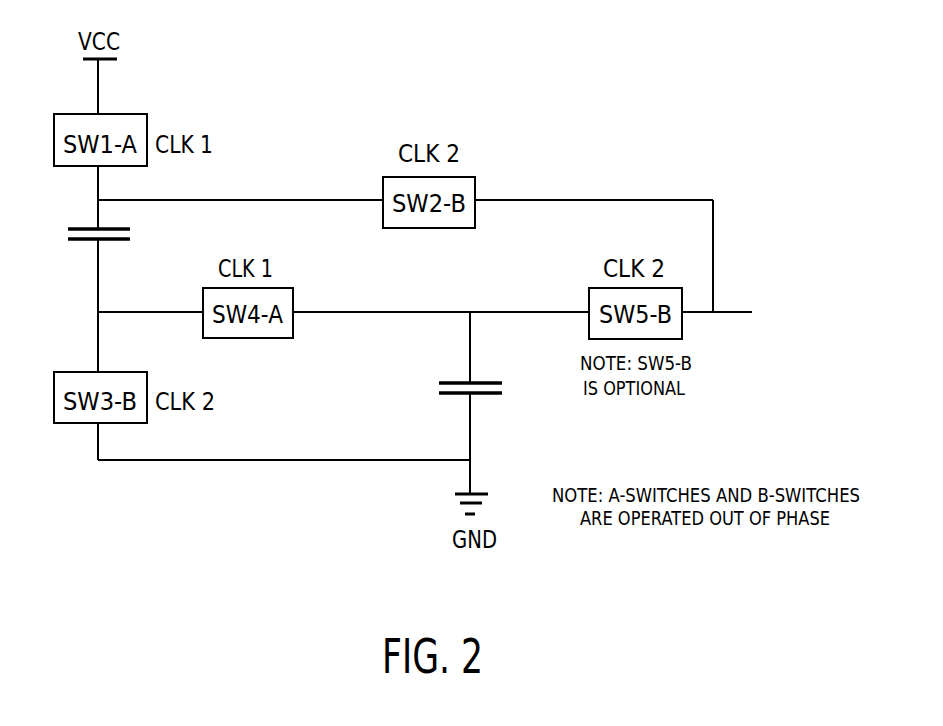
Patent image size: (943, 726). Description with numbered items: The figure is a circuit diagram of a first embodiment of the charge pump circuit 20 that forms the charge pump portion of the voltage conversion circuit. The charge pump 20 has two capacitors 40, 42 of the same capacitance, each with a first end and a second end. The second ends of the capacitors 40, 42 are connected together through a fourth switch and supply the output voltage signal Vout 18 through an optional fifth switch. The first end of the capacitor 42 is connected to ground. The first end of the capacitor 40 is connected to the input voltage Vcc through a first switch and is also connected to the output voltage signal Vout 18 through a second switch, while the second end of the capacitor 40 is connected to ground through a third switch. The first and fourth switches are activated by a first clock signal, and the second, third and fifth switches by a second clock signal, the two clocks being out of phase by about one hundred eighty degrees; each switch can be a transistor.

The output voltage signal Vout 18 is at (767, 317).
The charge pump circuit 20 is at (382, 275).
The capacitor 40 is at (83, 241).
The capacitor 42 is at (490, 397).